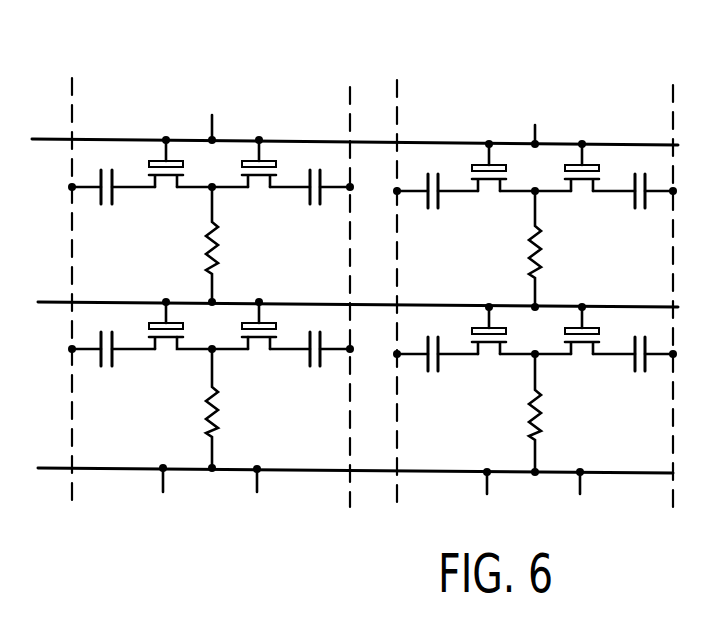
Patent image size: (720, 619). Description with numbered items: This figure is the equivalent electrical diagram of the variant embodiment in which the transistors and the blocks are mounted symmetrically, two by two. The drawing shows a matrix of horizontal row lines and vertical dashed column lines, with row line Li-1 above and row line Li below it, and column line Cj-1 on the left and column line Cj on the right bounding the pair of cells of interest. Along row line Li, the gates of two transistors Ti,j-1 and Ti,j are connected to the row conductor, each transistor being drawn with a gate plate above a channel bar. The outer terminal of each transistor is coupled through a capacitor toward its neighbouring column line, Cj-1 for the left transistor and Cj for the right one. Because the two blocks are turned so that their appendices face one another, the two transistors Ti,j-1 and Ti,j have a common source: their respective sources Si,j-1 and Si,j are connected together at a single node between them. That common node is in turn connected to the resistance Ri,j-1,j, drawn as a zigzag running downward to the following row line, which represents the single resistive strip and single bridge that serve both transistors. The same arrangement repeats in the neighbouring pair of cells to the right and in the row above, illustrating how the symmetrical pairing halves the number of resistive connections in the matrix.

The column line Cj-1 is at (68, 275).
The column line Cj is at (330, 275).
The row line Li-1 is at (351, 124).
The row line Li is at (358, 290).
The transistor Ti,j-1 is at (152, 320).
The transistor Ti,j is at (266, 318).
The source Si,j-1 is at (173, 349).
The source Si,j is at (245, 349).
The resistance Ri,j-1,j is at (208, 425).